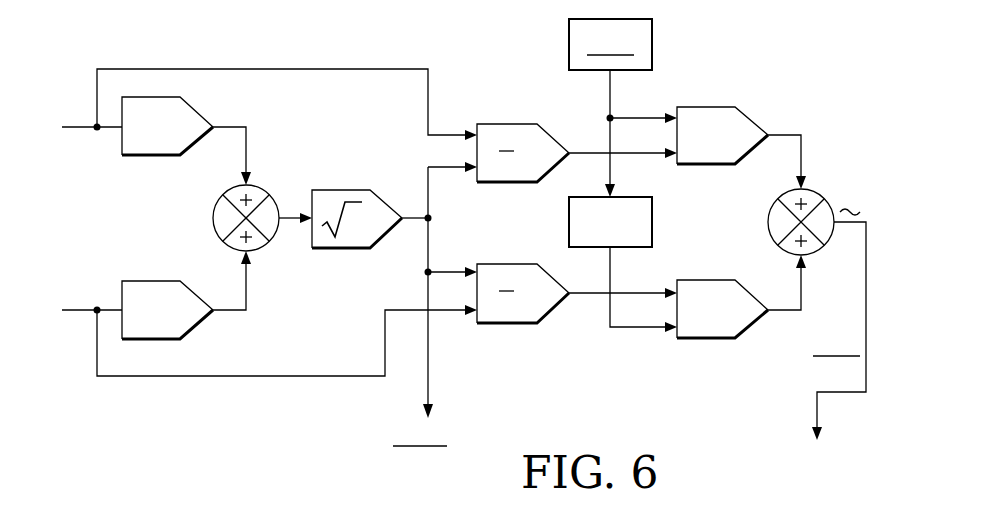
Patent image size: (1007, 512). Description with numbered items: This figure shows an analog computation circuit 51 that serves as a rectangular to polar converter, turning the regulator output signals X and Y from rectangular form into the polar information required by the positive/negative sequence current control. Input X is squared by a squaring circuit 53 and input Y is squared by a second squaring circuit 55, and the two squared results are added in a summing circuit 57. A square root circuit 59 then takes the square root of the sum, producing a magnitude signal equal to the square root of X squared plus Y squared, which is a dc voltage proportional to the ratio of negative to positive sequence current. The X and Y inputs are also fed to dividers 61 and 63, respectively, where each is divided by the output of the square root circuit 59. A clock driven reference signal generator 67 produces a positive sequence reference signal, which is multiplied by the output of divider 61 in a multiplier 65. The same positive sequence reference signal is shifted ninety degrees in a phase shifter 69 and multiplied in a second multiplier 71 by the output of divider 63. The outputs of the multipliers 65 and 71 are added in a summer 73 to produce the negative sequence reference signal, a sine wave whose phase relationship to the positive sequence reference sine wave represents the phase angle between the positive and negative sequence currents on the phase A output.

The analog computation circuit 51 is at (402, 26).
The squaring circuit 53 is at (155, 156).
The squaring circuit 55 is at (148, 281).
The summing circuit 57 is at (213, 218).
The square root circuit 59 is at (352, 190).
The divider 61 is at (503, 124).
The divider 63 is at (503, 264).
The multiplier 65 is at (715, 107).
The clock driven reference signal generator 67 is at (569, 43).
The phase shifter 69 is at (569, 215).
The multiplier 71 is at (715, 280).
The summer 73 is at (768, 222).